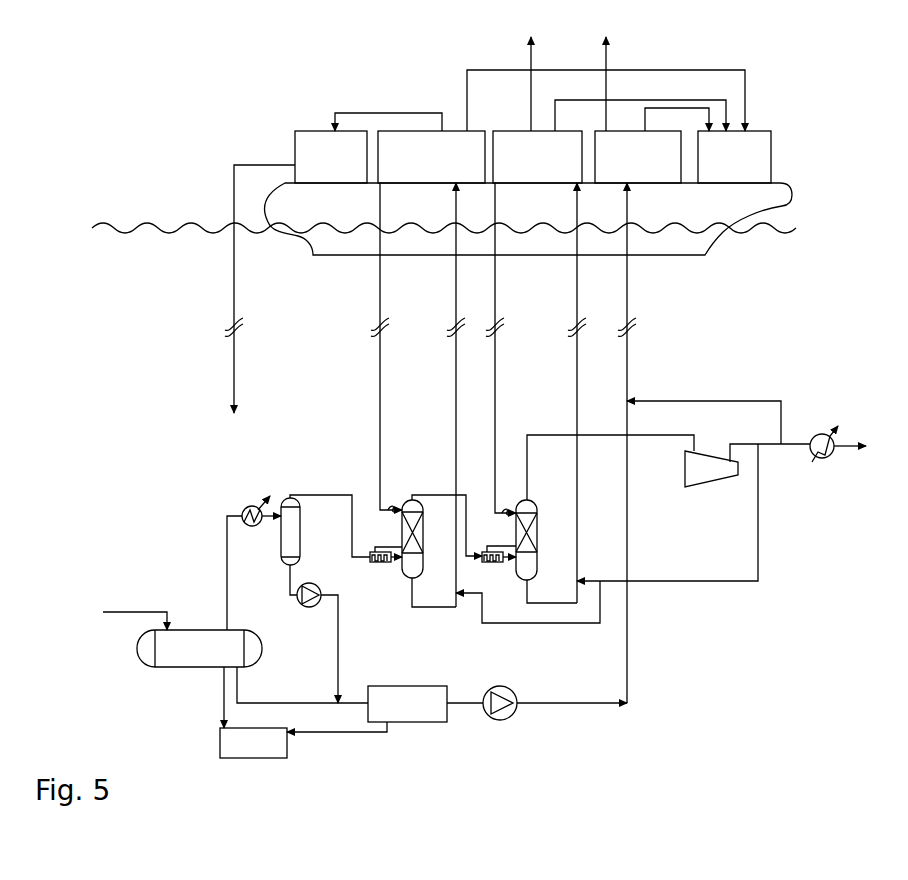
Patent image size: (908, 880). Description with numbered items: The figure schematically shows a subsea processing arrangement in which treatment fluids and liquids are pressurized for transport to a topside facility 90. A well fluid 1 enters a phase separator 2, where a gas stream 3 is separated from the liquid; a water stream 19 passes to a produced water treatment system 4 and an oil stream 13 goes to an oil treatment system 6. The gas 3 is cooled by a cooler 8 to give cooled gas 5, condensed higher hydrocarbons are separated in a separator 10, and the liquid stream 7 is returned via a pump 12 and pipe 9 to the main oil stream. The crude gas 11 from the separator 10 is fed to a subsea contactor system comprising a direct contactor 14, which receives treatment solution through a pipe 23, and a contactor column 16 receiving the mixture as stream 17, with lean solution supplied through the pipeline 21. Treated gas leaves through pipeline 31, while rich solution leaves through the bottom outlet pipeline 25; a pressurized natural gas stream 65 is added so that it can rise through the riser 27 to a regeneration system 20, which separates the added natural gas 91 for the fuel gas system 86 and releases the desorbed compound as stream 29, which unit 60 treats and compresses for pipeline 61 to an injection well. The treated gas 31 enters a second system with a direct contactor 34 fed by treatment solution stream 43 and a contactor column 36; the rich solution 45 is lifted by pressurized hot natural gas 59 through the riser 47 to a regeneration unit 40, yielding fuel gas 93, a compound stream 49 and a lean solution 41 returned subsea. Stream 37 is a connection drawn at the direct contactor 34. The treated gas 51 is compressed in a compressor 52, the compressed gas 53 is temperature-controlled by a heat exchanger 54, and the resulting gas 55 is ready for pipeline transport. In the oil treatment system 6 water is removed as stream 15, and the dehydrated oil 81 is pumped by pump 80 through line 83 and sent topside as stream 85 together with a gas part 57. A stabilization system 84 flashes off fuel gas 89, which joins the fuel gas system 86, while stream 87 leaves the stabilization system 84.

The well fluid 1 is at (135, 608).
The phase separator 2 is at (199, 648).
The gas stream 3 is at (243, 573).
The produced water treatment system 4 is at (253, 743).
The cooled gas 5 is at (271, 493).
The oil treatment system 6 is at (407, 704).
The liquid stream 7 is at (284, 580).
The cooler 8 is at (249, 527).
The pipe 9 is at (334, 649).
The separator 10 is at (302, 531).
The crude gas stream 11 is at (330, 514).
The pump 12 is at (308, 606).
The oil stream 13 is at (302, 685).
The direct contactor 14 is at (377, 570).
The separated water stream 15 is at (337, 742).
The contactor column 16 is at (426, 539).
The gas treatment solution mixture stream 17 is at (392, 563).
The water stream 19 is at (209, 697).
The regeneration system 20 is at (431, 157).
The pipeline/riser 21 is at (378, 347).
The pipe 23 is at (385, 537).
The bottom outlet pipeline 25 is at (434, 593).
The riser 27 is at (447, 395).
The desorbed compound stream 29 is at (388, 110).
The treated gas pipeline 31 is at (447, 512).
The direct contactor 34 is at (493, 570).
The contactor column 36 is at (539, 540).
The second heater outlet 37 is at (506, 563).
The regeneration unit 40 is at (537, 157).
The lean treatment solution 41 is at (503, 349).
The treatment solution stream 43 is at (498, 536).
The rich treatment solution stream 45 is at (552, 594).
The riser 47 is at (586, 393).
The compound stream 49 is at (545, 78).
The treated gas stream 51 is at (610, 455).
The compressor 52 is at (711, 478).
The compressed gas 53 is at (769, 441).
The heat exchanger 54 is at (823, 454).
The treated gas stream 55 is at (864, 446).
The added gas part 57 is at (704, 410).
The pressurized hot natural gas 59 is at (667, 527).
The treatment and compression unit 60 is at (331, 157).
The pipeline 61 is at (252, 289).
The pressurized natural gas stream 65 is at (528, 613).
The pump 80 is at (500, 716).
The dehydrated oil 81 is at (465, 717).
The pump discharge line 83 is at (572, 565).
The stabilization system 84 is at (638, 157).
The oil stream 85 is at (636, 292).
The fuel gas system 86 is at (734, 157).
The separation outlet 87 is at (621, 78).
The fuel gas 89 is at (677, 116).
The topside facility 90 is at (444, 219).
The added natural gas pipeline 91 is at (606, 87).
The fuel gas 93 is at (640, 102).